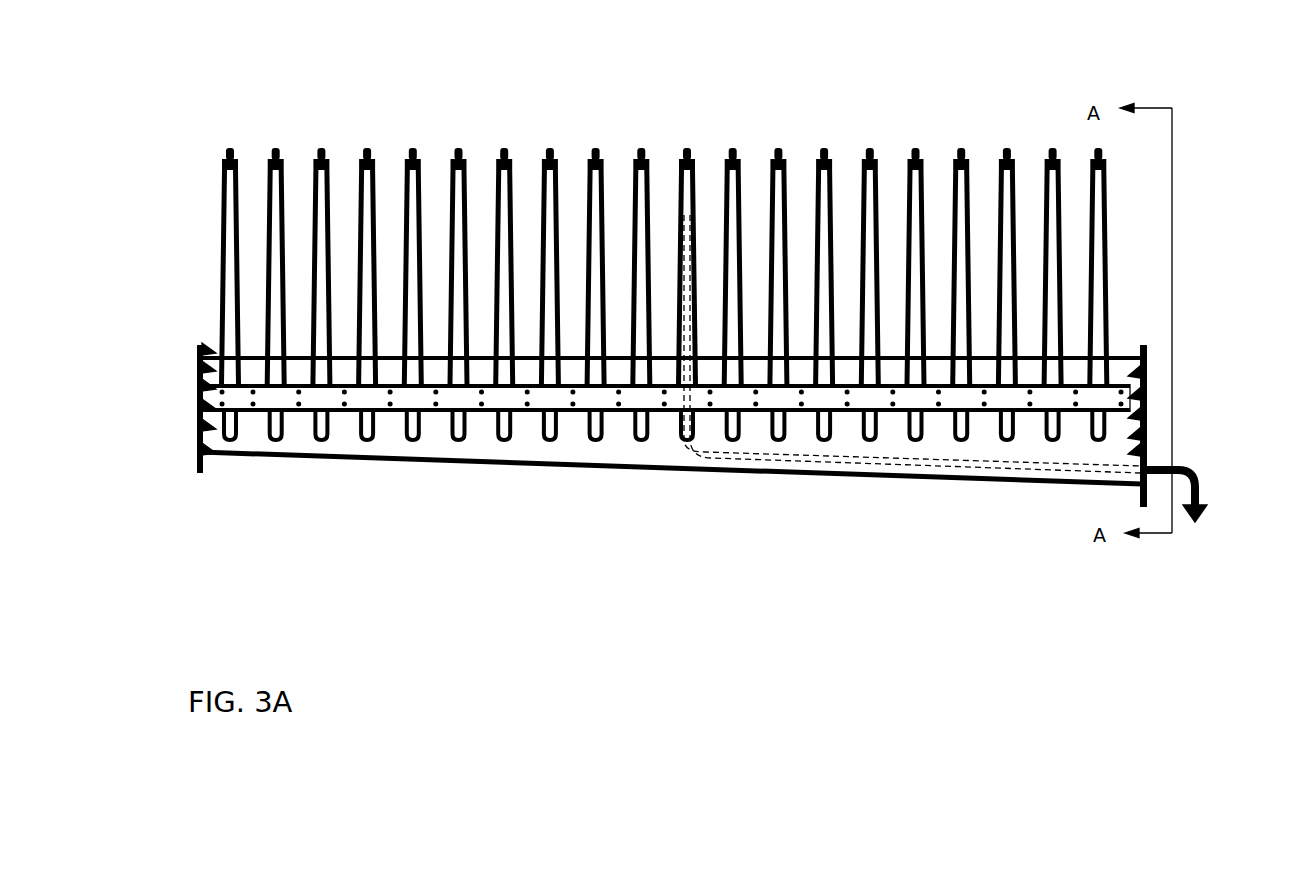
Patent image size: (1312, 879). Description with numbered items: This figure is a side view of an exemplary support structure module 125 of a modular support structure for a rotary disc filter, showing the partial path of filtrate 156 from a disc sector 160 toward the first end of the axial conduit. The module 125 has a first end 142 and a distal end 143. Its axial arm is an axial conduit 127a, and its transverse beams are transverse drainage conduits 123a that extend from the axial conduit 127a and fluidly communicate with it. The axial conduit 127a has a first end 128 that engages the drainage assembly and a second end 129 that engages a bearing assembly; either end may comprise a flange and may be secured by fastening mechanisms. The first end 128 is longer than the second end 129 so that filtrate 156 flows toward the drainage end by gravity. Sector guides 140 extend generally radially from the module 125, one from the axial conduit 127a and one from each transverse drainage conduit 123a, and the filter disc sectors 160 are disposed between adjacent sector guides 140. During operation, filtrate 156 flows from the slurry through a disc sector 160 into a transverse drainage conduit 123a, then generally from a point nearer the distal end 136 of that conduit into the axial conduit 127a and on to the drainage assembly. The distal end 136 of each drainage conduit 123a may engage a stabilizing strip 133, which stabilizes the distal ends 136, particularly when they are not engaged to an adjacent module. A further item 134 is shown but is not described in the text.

The disc sector 160 is at (446, 190).
The sector guide 140 is at (373, 173).
The filtrate 156 is at (688, 218).
The first end 142 is at (1215, 235).
The first end of the axial conduit 128 is at (1202, 381).
The distal end 143 is at (152, 283).
The second end of the axial conduit 129 is at (162, 410).
The support structure module 125 is at (285, 478).
The axial conduit 127a is at (610, 452).
The stabilizing strip 133 is at (493, 393).
The channel 134 is at (530, 435).
The distal end of the drainage conduit 136 is at (342, 427).
The transverse drainage conduit 123a is at (363, 435).